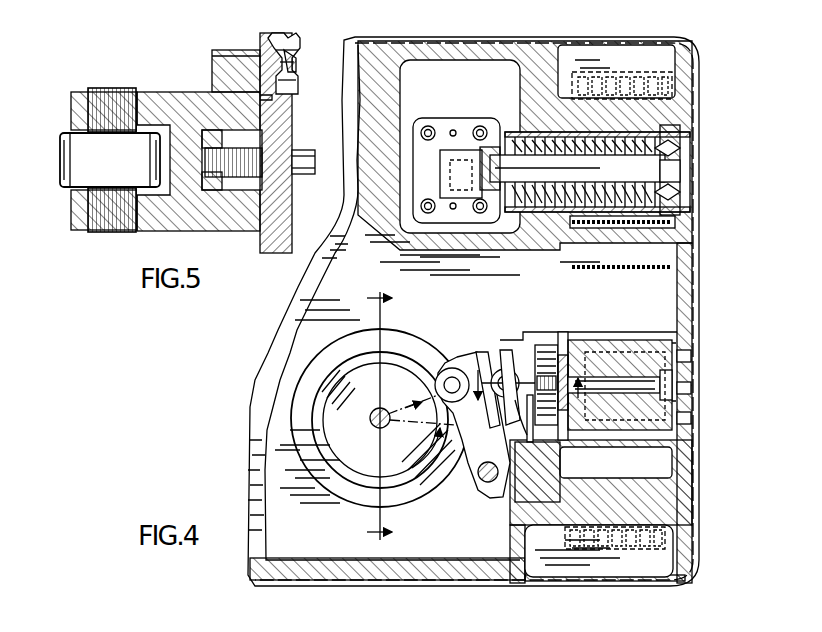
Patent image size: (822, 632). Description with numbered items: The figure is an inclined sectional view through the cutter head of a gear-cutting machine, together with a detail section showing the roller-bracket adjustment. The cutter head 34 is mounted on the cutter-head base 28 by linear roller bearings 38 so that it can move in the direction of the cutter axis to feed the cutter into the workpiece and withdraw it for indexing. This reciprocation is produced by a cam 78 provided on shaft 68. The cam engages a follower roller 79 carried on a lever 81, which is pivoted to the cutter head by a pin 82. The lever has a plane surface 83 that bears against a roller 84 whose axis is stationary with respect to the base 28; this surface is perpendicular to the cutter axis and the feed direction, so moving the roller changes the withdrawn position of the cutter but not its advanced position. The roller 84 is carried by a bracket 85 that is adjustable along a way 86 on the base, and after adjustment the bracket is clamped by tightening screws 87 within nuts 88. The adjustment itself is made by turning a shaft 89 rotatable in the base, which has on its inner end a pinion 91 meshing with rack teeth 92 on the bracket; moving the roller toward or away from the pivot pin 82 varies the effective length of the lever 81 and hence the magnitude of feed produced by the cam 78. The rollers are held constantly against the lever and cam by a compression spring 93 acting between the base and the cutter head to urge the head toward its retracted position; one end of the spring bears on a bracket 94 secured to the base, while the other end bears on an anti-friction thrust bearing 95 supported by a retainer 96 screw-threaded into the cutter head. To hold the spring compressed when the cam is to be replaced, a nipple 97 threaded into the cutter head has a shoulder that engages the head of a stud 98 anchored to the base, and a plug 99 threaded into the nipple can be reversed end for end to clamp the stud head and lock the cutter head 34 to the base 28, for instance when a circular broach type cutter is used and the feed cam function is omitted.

In FIG. 4, the cutter-head base 28 is at (284, 334).
In FIG. 4, the cutter head 34 is at (700, 300).
In FIG. 4, the linear roller bearings 38 is at (650, 88).
In FIG. 4, the shaft 68 is at (370, 423).
In FIG. 4, the cam 78 is at (374, 395).
In FIG. 4, the follower roller 79 is at (452, 370).
In FIG. 4, the lever 81 is at (456, 367).
In FIG. 4, the pin 82 is at (480, 481).
In FIG. 4, the plane surface 83 is at (484, 352).
In FIG. 5, the roller 84 is at (62, 158).
In FIG. 4, the roller 84 is at (507, 370).
In FIG. 5, the bracket 85 is at (228, 212).
In FIG. 4, the bracket 85 is at (540, 345).
In FIG. 5, the way 86 is at (272, 122).
In FIG. 4, the way 86 is at (568, 345).
In FIG. 5, the screws 87 is at (304, 158).
In FIG. 4, the screws 87 is at (610, 340).
In FIG. 5, the nuts 88 is at (216, 130).
In FIG. 4, the nuts 88 is at (558, 475).
In FIG. 5, the shaft 89 is at (300, 58).
In FIG. 4, the shaft 89 is at (692, 395).
In FIG. 5, the pinion 91 is at (232, 52).
In FIG. 4, the pinion 91 is at (562, 345).
In FIG. 4, the rack teeth 92 is at (524, 410).
In FIG. 4, the compression spring 93 is at (548, 212).
In FIG. 4, the bracket 94 is at (448, 118).
In FIG. 4, the anti-friction thrust bearing 95 is at (682, 148).
In FIG. 4, the retainer 96 is at (690, 132).
In FIG. 4, the nipple 97 is at (690, 170).
In FIG. 4, the stud 98 is at (612, 160).
In FIG. 4, the plug 99 is at (682, 190).